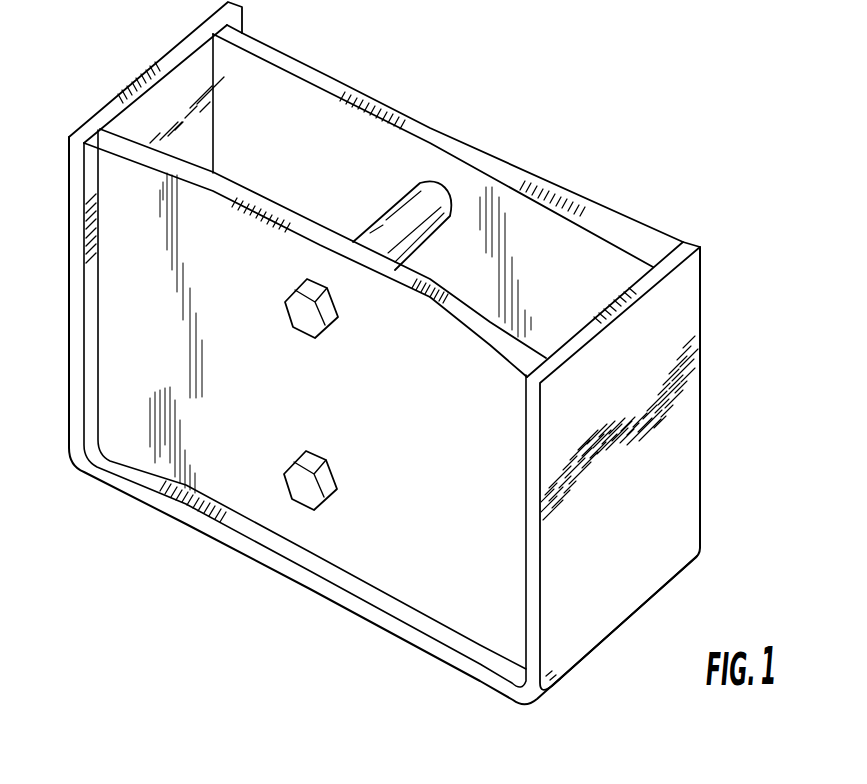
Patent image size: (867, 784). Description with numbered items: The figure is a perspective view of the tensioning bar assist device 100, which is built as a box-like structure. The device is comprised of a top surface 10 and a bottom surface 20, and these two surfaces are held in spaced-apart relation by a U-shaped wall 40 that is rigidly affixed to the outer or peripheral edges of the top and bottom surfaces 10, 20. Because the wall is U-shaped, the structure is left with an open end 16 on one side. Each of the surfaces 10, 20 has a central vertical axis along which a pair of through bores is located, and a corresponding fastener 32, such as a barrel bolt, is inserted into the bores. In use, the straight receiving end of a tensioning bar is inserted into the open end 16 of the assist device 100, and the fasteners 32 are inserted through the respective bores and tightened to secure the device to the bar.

The top surface 10 is at (120, 326).
The open end of assist device 16 is at (176, 96).
The bottom surface 20 is at (405, 163).
The fastener 32 is at (313, 338).
The U-shaped wall 40 is at (668, 493).
The tensioning bar assist device 100 is at (165, 605).